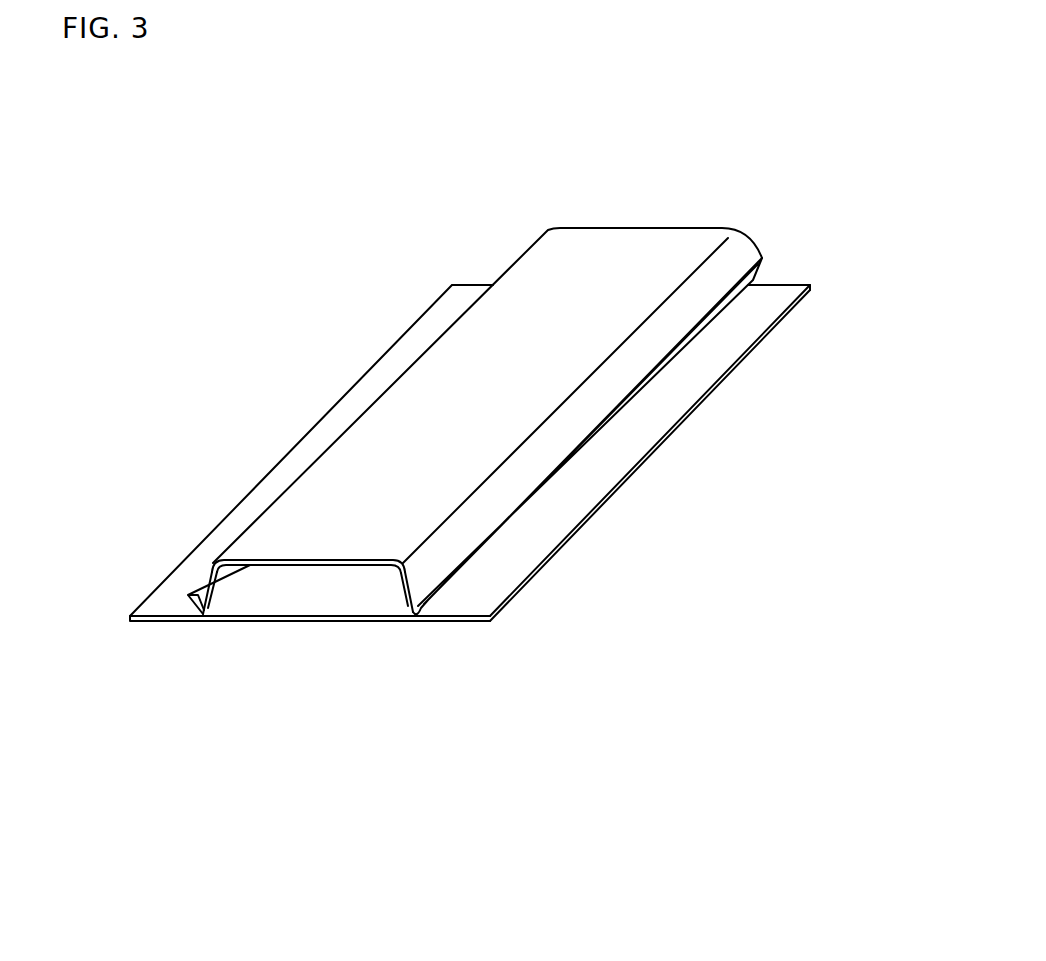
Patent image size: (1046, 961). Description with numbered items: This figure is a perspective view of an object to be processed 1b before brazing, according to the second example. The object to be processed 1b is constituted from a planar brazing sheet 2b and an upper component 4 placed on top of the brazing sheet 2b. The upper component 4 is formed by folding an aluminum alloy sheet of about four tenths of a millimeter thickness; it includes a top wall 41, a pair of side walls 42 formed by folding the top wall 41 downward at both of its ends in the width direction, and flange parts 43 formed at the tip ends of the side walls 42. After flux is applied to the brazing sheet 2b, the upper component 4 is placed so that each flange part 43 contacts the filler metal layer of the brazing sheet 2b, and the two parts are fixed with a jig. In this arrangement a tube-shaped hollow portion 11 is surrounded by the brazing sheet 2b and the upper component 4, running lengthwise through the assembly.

The object to be processed 1b is at (295, 278).
The brazing sheet 2b is at (615, 455).
The upper component 4 is at (627, 227).
The top wall 41 is at (650, 260).
The side walls 42 is at (727, 265).
The flange parts 43 is at (735, 292).
The hollow portion 11 is at (353, 592).